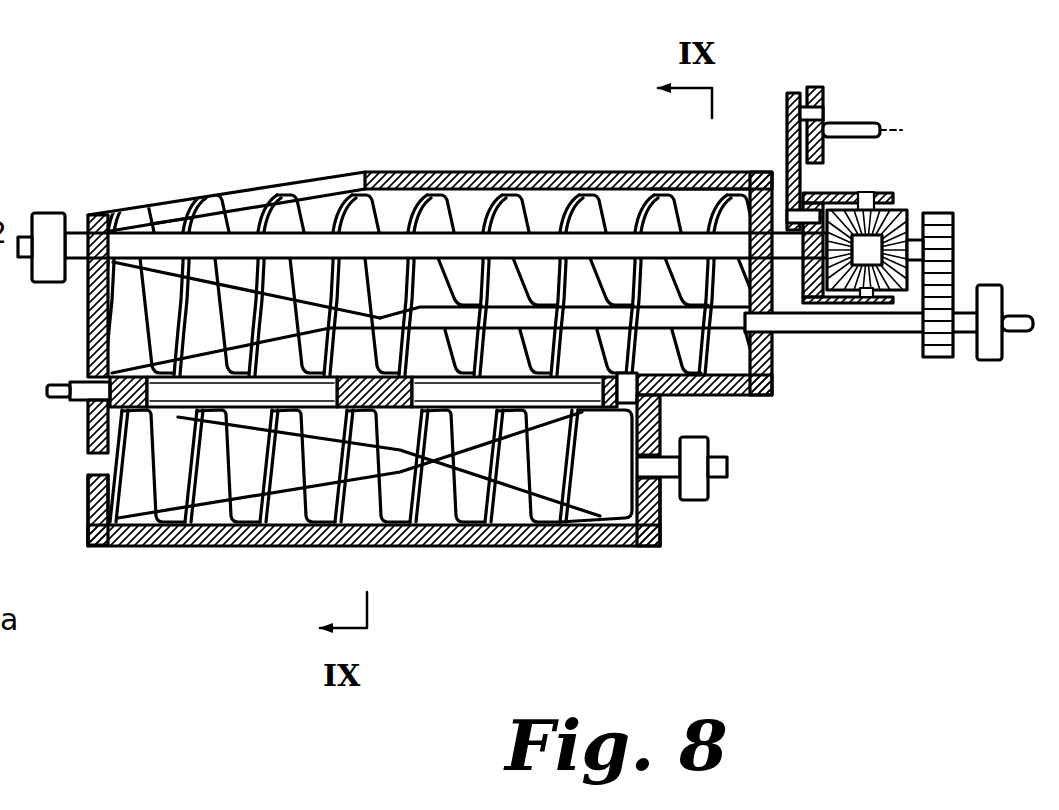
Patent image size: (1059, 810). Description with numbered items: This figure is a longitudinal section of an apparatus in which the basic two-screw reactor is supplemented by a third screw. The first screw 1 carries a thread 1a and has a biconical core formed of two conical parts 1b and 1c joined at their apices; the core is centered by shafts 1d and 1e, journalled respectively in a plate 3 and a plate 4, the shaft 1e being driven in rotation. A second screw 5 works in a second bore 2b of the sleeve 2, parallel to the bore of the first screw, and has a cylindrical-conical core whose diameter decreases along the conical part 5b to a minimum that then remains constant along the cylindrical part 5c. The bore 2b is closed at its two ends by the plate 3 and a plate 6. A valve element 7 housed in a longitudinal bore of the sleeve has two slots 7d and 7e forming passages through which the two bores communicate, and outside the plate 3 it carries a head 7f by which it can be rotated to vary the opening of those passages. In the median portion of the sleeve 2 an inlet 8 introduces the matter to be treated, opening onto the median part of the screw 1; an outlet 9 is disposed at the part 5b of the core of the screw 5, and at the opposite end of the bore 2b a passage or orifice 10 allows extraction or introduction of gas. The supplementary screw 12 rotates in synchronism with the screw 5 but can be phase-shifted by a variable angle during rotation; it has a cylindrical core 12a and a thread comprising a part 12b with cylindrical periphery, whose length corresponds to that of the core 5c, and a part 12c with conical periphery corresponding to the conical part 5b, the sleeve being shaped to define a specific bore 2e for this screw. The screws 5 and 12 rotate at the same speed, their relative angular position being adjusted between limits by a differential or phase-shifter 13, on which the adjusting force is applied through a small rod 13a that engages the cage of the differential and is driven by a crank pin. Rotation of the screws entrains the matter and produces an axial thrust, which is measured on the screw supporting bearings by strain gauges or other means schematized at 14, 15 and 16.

The first screw 1 is at (450, 542).
The thread 1a is at (596, 505).
The conical part of core 1b is at (147, 545).
The conical part of core 1c is at (517, 478).
The shaft 1d is at (63, 545).
The shaft 1e is at (648, 482).
The sleeve 2 is at (454, 362).
The second bore 2b is at (730, 357).
The specific bore 2e is at (320, 215).
The plate 3 is at (100, 217).
The plate 4 is at (655, 548).
The screw 5 is at (421, 284).
The conical part of core 5b is at (143, 293).
The cylindrical core part 5c is at (733, 320).
The plate 6 is at (767, 383).
The valve element 7 is at (332, 417).
The slot 7d is at (180, 417).
The slot 7e is at (513, 387).
The head 7f is at (57, 383).
The inlet 8 is at (347, 493).
The outlet 9 is at (167, 215).
The passage or orifice 10 is at (687, 185).
The screw 12 is at (550, 222).
The cylindrical core 12a is at (610, 247).
The thread part with cylindrical periphery 12b is at (457, 207).
The thread part with conical periphery 12c is at (255, 215).
The differential or phase-shifter 13 is at (933, 190).
The small rod 13a is at (800, 177).
The strain gauge 14 is at (702, 490).
The strain gauge 15 is at (938, 360).
The strain gauge 16 is at (50, 232).